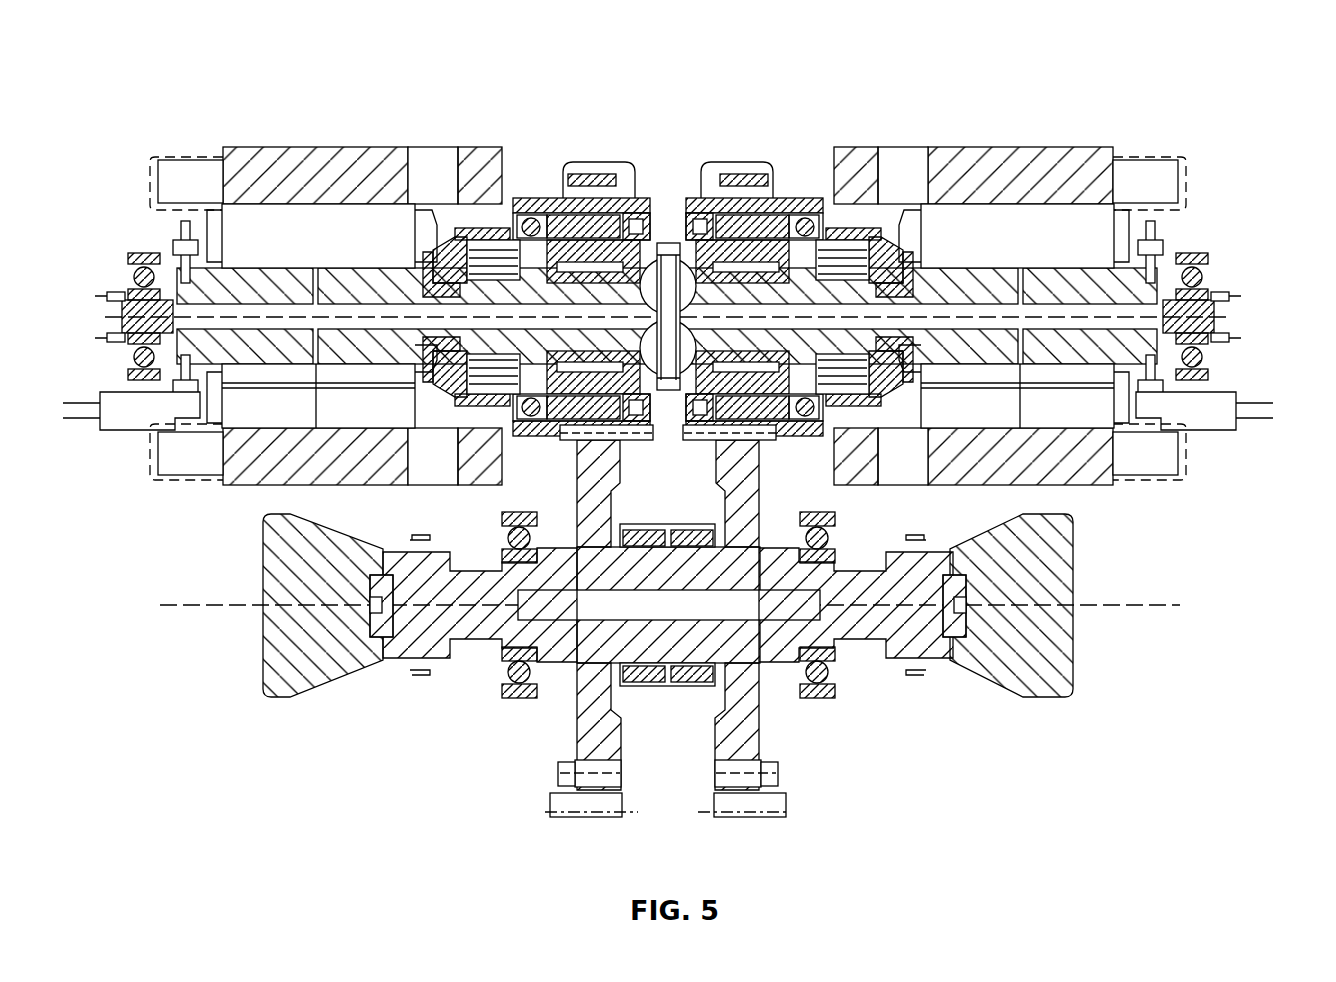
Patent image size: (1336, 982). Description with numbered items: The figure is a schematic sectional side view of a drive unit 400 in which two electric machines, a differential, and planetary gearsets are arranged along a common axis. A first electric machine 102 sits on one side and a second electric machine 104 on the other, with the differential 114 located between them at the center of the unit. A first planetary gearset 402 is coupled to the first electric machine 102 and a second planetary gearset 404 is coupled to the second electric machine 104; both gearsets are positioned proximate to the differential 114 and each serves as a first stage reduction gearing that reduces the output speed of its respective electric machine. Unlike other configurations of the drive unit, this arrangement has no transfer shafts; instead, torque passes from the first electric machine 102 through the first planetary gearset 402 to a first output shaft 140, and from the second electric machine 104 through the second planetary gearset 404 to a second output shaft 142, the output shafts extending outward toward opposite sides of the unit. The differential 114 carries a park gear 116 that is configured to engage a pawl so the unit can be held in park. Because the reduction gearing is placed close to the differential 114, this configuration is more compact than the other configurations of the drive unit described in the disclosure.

The drive unit 400 is at (1130, 88).
The first electric machine 102 is at (300, 200).
The second electric machine 104 is at (1055, 202).
The first planetary gearset 402 is at (492, 237).
The second planetary gearset 404 is at (843, 237).
The differential 114 is at (668, 173).
The park gear 116 is at (668, 247).
The first output shaft 140 is at (432, 617).
The second output shaft 142 is at (868, 623).